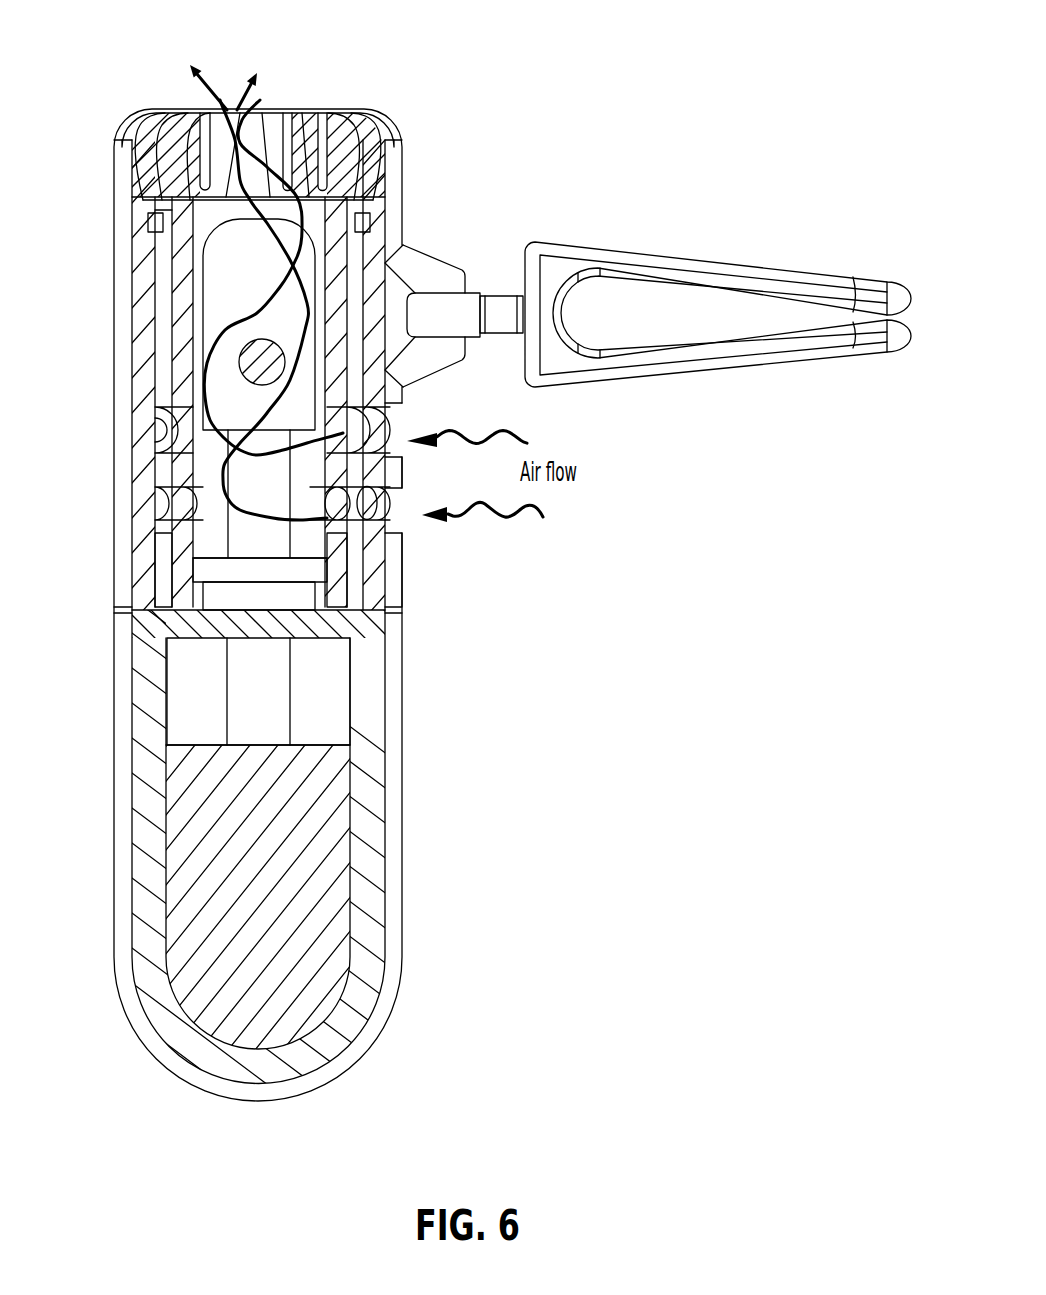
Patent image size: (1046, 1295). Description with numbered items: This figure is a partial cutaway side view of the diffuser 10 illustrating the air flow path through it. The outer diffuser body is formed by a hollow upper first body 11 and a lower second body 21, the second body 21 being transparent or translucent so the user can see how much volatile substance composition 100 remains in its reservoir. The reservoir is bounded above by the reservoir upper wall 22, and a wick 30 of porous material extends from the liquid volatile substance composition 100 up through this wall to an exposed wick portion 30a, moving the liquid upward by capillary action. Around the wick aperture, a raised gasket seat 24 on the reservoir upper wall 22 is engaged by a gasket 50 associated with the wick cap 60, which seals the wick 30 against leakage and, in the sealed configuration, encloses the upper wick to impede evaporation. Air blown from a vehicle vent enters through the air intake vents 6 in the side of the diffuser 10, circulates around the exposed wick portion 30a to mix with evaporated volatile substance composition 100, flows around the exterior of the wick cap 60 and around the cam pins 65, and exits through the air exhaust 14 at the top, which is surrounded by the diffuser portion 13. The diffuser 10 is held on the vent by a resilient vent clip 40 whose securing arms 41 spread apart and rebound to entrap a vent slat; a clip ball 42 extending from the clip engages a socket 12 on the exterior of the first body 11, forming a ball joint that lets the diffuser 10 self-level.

The air intake vents 6 is at (428, 537).
The diffuser 10 is at (126, 79).
The first body 11 is at (123, 310).
The socket 12 is at (427, 262).
The diffuser portion 13 is at (326, 122).
The air exhaust 14 is at (307, 97).
The second body 21 is at (358, 1048).
The reservoir upper wall 22 is at (235, 628).
The gasket seat 24 is at (235, 598).
The wick 30 is at (255, 692).
The exposed wick portion 30a is at (243, 543).
The vent clip 40 is at (805, 240).
The securing arms 41 is at (860, 345).
The clip ball 42 is at (472, 302).
The gasket 50 is at (235, 568).
The wick cap 60 is at (203, 333).
The cam pins 65 is at (245, 365).
The volatile substance composition 100 is at (327, 868).